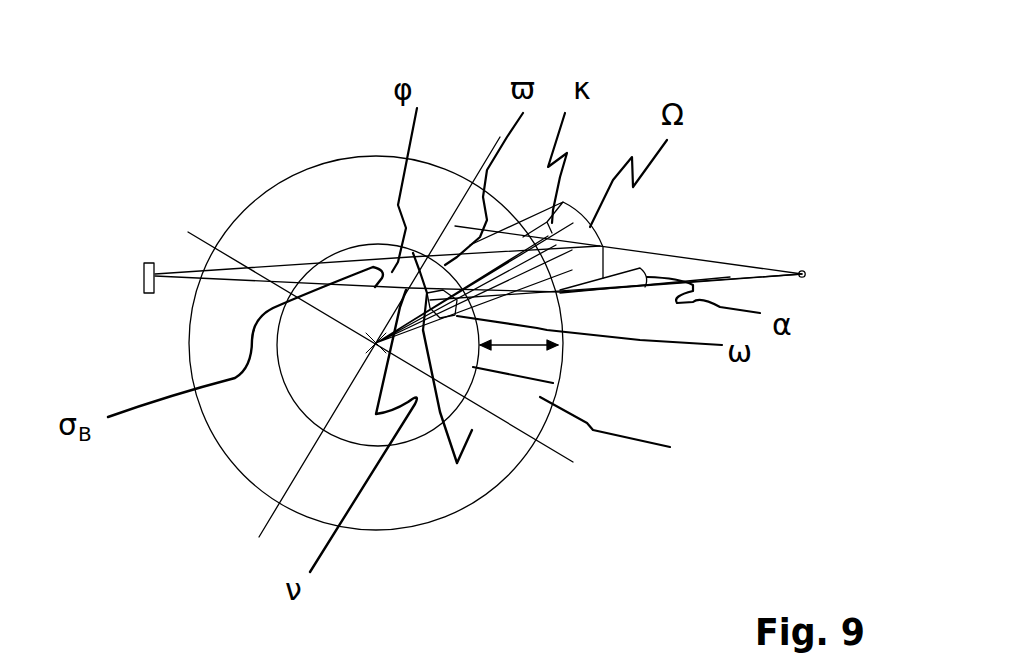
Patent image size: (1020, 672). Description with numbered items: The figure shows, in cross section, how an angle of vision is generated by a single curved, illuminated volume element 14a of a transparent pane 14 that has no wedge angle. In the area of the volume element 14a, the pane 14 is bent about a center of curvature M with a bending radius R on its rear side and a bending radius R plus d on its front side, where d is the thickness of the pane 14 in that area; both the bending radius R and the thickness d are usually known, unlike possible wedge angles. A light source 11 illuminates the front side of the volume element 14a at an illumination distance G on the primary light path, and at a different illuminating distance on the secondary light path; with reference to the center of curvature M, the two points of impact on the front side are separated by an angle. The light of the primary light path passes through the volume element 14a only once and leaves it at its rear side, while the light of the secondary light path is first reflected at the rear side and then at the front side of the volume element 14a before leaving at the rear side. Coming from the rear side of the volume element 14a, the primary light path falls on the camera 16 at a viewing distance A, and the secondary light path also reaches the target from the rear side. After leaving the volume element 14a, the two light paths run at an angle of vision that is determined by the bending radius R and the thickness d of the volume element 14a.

The light source 11 is at (805, 272).
The pane 14 is at (525, 456).
The volume element 14a is at (413, 253).
The camera 16 is at (145, 263).
The viewing distance A is at (290, 267).
The illumination distance G is at (683, 255).
The center of curvature M is at (374, 345).
The bending radius R is at (472, 430).
The thickness d is at (536, 343).